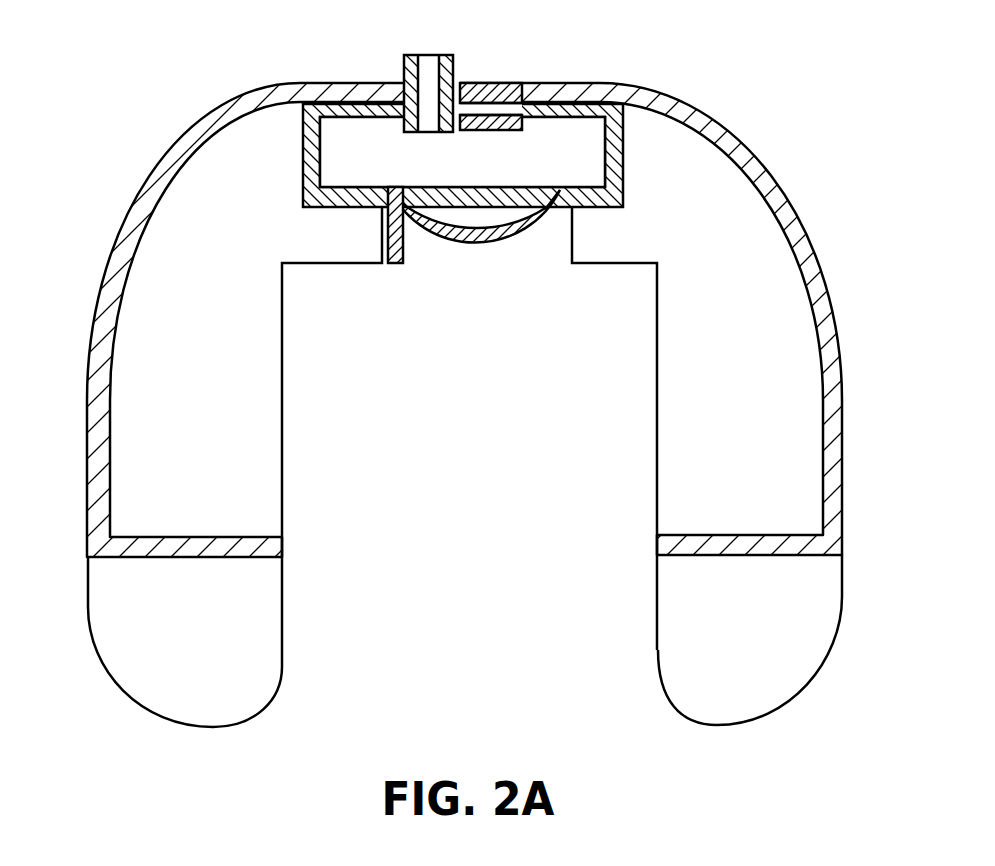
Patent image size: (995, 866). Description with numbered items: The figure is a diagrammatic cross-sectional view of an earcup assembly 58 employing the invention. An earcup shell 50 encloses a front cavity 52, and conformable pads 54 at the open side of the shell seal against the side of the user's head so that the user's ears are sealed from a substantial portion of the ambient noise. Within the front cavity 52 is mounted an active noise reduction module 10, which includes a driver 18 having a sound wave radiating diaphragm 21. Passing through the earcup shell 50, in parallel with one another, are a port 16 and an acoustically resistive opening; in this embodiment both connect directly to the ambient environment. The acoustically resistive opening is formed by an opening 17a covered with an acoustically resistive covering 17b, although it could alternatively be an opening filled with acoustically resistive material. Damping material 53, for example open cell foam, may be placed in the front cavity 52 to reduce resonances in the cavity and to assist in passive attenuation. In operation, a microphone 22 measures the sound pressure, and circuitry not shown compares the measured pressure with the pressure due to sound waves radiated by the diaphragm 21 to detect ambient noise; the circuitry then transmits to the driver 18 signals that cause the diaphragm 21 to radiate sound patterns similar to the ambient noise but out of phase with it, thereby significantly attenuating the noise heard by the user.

The active noise reduction module 10 is at (303, 163).
The port 16 is at (428, 65).
The opening 17a is at (488, 108).
The acoustically resistive covering 17b is at (507, 82).
The driver 18 is at (508, 268).
The sound wave radiating diaphragm 21 is at (470, 217).
The microphone 22 is at (393, 265).
The earcup shell 50 is at (101, 317).
The front cavity 52 is at (590, 463).
The damping material 53 is at (155, 442).
The conformable pads 54 is at (140, 700).
The earcup assembly 58 is at (137, 178).